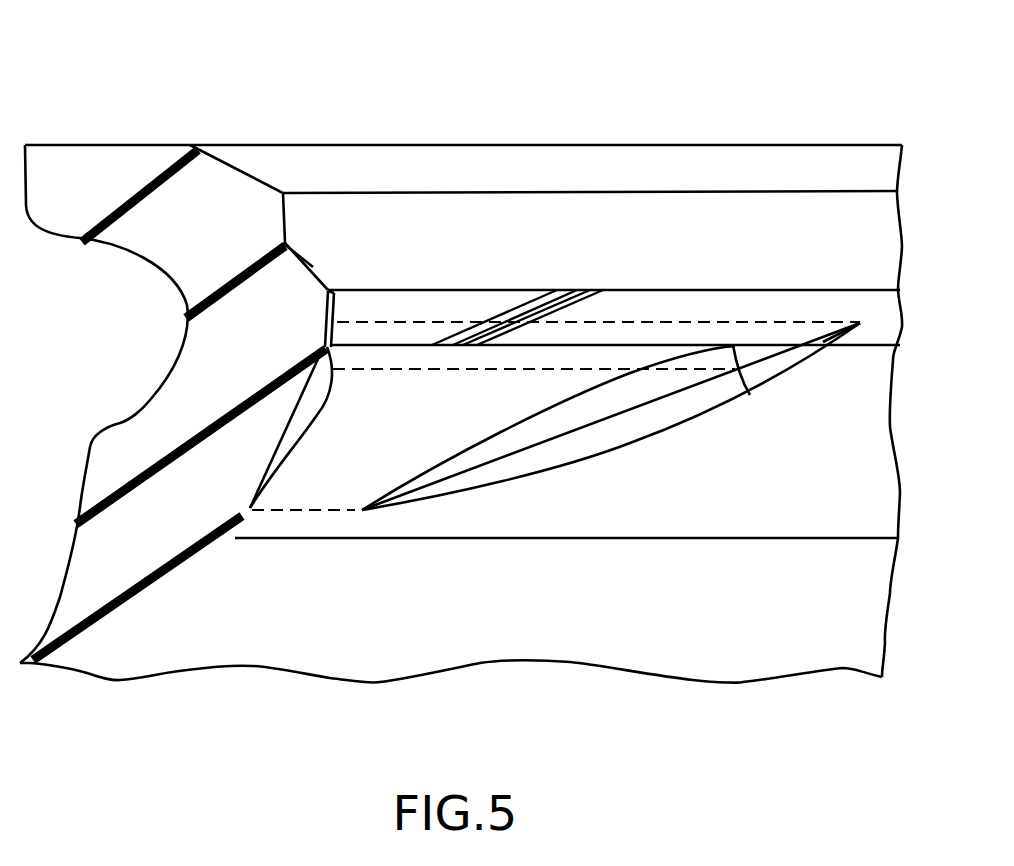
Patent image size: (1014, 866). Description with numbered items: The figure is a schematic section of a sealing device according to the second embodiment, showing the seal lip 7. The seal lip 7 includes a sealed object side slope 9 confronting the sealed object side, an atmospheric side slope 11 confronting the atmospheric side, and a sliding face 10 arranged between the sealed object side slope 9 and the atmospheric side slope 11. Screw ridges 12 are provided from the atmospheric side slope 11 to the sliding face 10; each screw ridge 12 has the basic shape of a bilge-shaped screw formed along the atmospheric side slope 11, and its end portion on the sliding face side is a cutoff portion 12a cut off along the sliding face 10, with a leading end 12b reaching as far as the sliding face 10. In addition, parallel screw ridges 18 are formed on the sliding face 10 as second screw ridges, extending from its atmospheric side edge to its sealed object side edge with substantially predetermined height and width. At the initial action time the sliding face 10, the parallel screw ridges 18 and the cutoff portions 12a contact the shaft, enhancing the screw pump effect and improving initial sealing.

The seal lip 7 is at (138, 115).
The sealed object side slope 9 is at (313, 267).
The sliding face 10 is at (343, 315).
The atmospheric side slope 11 is at (270, 466).
The screw ridge 12 is at (312, 410).
The cutoff portion 12a is at (750, 353).
The leading end 12b is at (860, 323).
The parallel screw ridge 18 is at (400, 328).